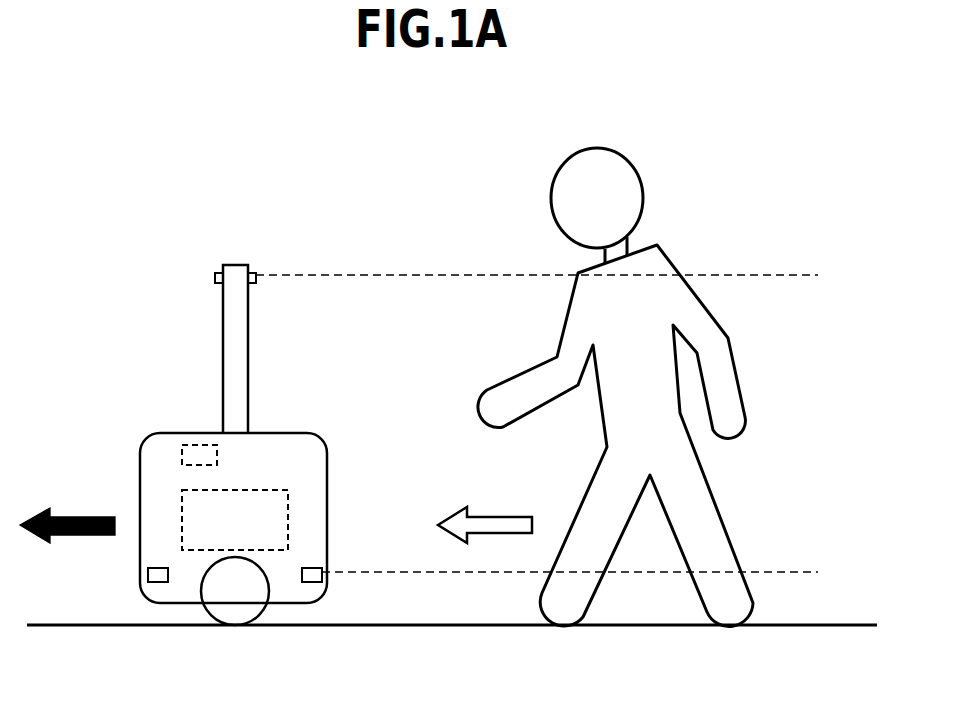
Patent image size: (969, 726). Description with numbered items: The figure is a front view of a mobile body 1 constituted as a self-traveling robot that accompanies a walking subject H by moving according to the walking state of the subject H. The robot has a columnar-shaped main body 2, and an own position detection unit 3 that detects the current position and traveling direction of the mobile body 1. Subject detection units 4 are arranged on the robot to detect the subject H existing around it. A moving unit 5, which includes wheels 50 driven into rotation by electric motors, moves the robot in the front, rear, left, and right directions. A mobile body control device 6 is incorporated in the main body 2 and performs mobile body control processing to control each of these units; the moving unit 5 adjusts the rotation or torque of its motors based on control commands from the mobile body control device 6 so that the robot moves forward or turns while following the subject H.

The mobile body 1 is at (236, 190).
The main body 2 is at (302, 460).
The own position detection unit 3 is at (182, 455).
The subject detection units 4 is at (215, 277).
The moving unit 5 is at (212, 648).
The wheels 50 is at (240, 615).
The mobile body control device 6 is at (288, 518).
The subject H is at (677, 188).